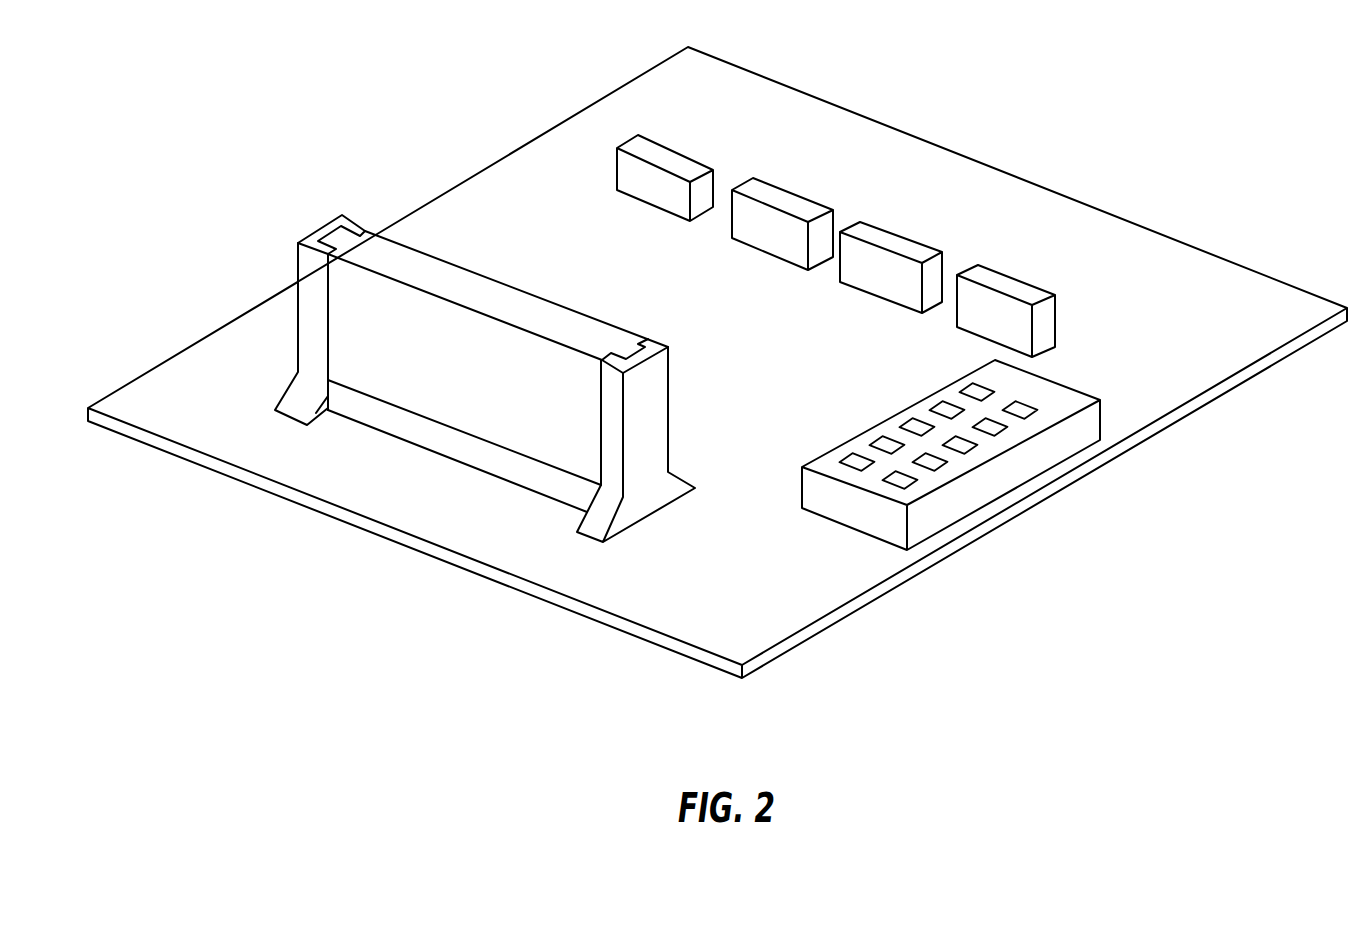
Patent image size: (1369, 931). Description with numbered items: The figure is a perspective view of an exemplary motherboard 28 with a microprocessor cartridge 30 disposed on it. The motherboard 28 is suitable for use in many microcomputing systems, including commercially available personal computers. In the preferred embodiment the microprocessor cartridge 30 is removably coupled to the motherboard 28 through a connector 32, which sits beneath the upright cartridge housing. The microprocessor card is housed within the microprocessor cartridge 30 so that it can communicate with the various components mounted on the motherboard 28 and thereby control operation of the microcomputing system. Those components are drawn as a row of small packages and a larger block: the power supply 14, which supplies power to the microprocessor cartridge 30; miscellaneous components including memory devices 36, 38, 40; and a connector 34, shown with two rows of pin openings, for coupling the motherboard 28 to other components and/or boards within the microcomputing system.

The motherboard 28 is at (705, 70).
The microprocessor cartridge 30 is at (408, 368).
The connector 32 is at (443, 440).
The power supply 14 is at (660, 158).
The memory device 36 is at (780, 205).
The memory device 38 is at (892, 247).
The memory device 40 is at (997, 285).
The connector 34 is at (1028, 458).